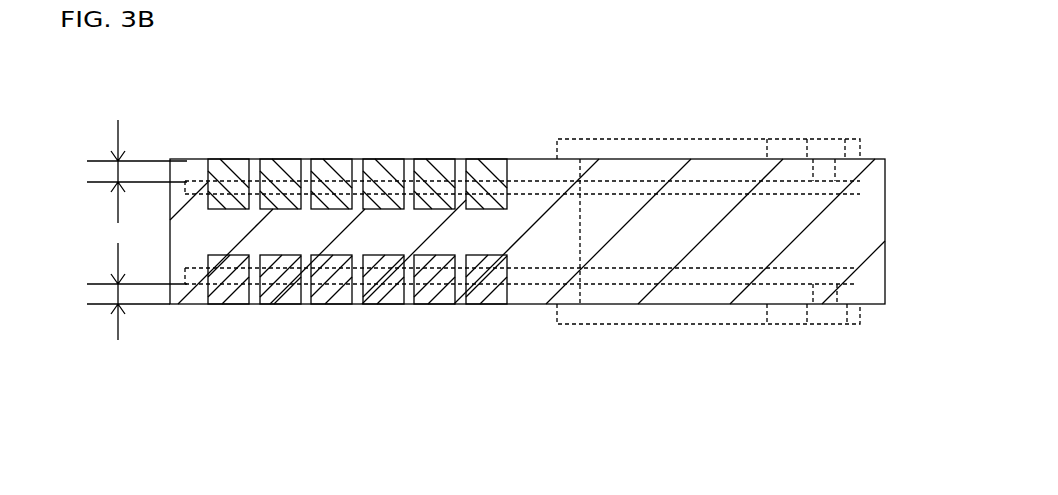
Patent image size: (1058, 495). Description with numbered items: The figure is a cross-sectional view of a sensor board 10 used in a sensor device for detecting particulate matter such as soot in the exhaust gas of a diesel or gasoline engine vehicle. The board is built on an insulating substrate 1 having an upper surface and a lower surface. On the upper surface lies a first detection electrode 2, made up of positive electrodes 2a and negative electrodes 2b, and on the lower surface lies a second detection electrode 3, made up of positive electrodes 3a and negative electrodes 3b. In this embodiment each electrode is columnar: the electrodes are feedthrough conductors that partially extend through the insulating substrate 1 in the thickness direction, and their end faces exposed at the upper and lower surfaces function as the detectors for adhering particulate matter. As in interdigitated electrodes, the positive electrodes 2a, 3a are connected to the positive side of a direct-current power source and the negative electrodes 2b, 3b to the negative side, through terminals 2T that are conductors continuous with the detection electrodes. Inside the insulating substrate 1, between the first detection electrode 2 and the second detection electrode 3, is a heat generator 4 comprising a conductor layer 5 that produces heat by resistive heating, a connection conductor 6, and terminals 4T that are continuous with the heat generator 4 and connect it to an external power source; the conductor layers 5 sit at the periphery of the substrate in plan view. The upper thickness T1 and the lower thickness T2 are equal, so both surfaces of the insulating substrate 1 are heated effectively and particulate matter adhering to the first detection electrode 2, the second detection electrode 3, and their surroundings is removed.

The sensor board 10 is at (206, 120).
The insulating substrate 1 is at (868, 158).
The first detection electrode 2 is at (383, 134).
The positive electrode 2a is at (487, 160).
The negative electrode 2b is at (437, 160).
The second detection electrode 3 is at (390, 345).
The positive electrode 3a is at (483, 305).
The negative electrode 3b is at (440, 305).
The heat generator 4 is at (522, 298).
The conductor layer 5 is at (257, 307).
The connection conductor 6 is at (690, 273).
The terminals of the detection electrodes 2T is at (790, 158).
The terminals of the heat generator 4T is at (818, 140).
The upper thickness T1 is at (116, 171).
The lower thickness T2 is at (116, 291).